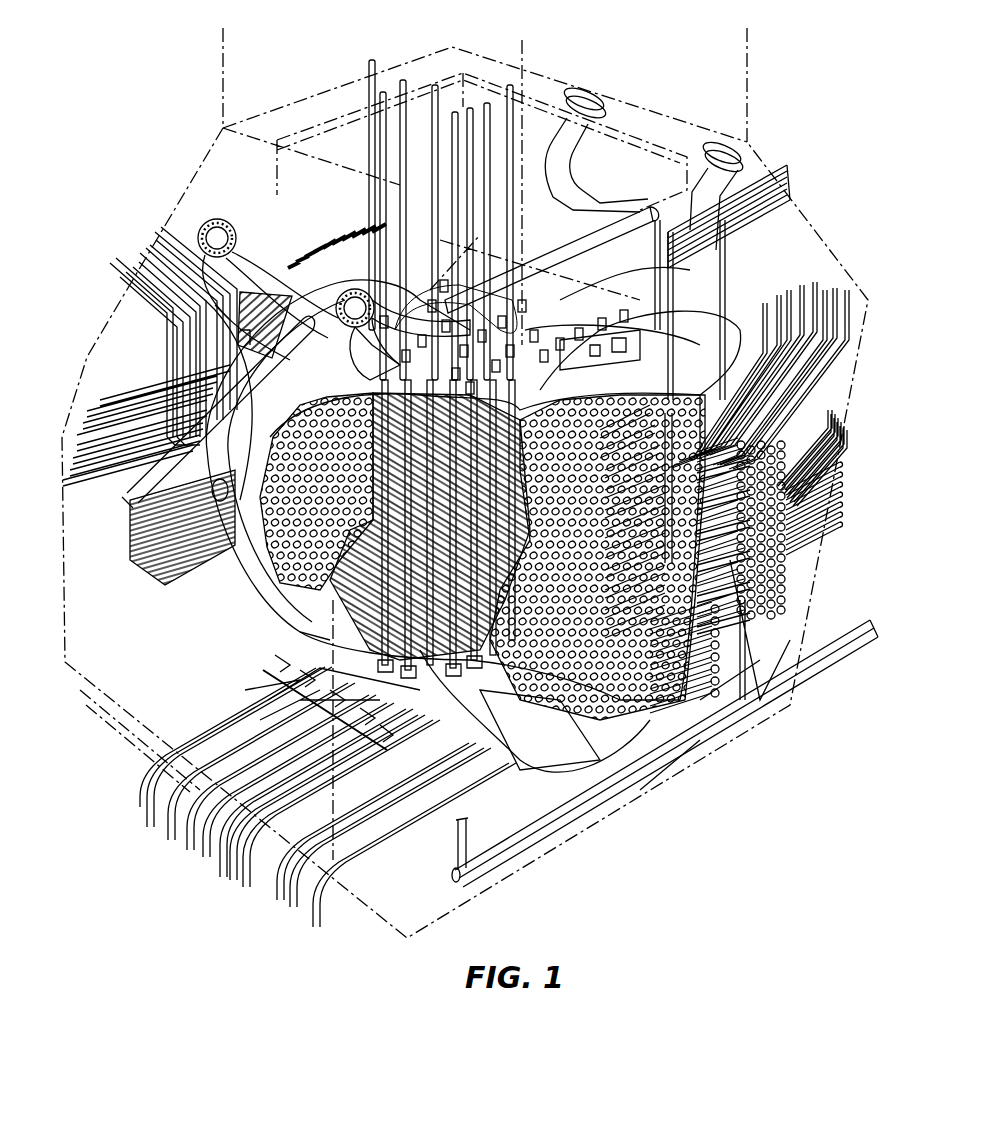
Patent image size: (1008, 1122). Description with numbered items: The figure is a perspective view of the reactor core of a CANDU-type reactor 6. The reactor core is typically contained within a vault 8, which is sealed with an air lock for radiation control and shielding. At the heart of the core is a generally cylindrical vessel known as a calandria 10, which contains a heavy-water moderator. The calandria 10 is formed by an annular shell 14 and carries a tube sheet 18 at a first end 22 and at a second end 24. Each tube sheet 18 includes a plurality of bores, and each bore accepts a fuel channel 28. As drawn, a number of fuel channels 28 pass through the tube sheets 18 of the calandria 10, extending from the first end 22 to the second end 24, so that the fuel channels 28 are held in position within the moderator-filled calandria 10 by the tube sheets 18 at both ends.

The CANDU-type reactor 6 is at (142, 127).
The vault 8 is at (546, 88).
The calandria 10 is at (322, 380).
The annular shell 14 is at (200, 432).
The tube sheet 18 is at (300, 572).
The first end 22 is at (700, 365).
The second end 24 is at (272, 262).
The fuel channel 28 is at (350, 612).